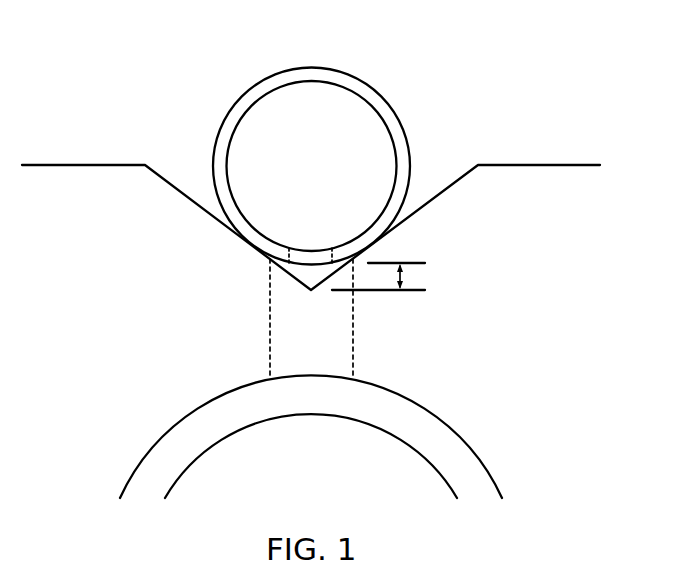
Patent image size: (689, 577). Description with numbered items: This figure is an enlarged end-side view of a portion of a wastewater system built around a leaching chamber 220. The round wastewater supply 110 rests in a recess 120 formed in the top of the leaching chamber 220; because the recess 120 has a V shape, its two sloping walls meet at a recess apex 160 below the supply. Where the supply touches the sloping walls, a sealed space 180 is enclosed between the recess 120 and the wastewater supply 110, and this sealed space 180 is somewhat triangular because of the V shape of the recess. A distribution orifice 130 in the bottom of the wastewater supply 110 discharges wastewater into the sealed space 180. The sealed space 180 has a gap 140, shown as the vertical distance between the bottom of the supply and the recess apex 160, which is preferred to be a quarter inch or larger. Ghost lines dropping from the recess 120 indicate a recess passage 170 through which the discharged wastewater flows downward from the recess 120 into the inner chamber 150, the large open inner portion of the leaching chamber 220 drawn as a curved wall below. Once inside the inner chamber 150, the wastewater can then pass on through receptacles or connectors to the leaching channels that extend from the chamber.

The wastewater supply 110 is at (220, 118).
The recess 120 is at (204, 209).
The distribution orifice 130 is at (312, 241).
The gap 140 is at (403, 280).
The inner chamber 150 is at (462, 439).
The recess apex 160 is at (311, 291).
The recess passage 170 is at (353, 347).
The sealed space 180 is at (298, 273).
The leaching chamber 220 is at (98, 275).